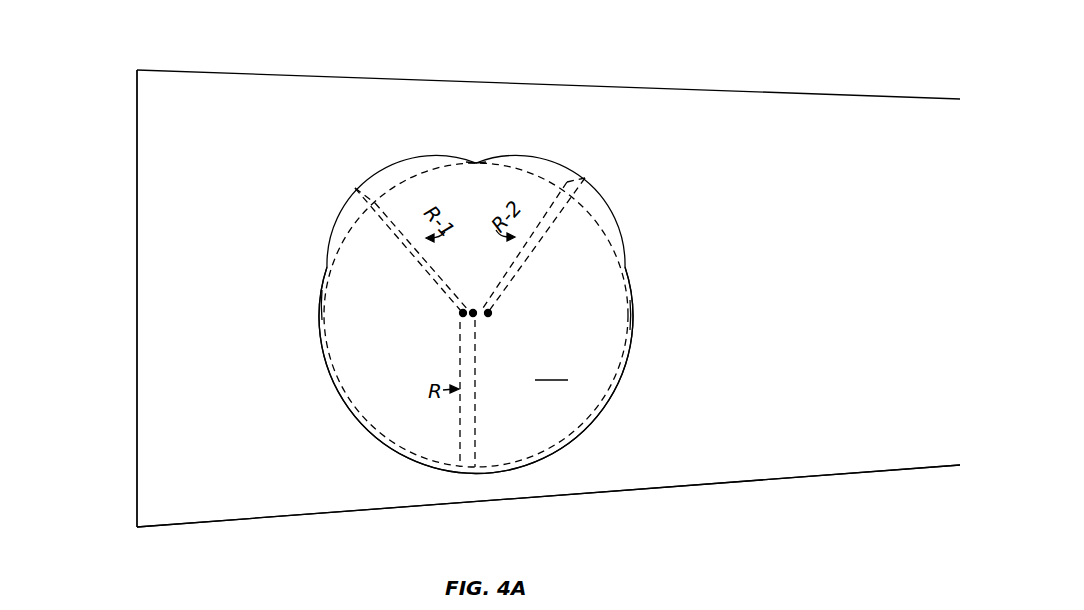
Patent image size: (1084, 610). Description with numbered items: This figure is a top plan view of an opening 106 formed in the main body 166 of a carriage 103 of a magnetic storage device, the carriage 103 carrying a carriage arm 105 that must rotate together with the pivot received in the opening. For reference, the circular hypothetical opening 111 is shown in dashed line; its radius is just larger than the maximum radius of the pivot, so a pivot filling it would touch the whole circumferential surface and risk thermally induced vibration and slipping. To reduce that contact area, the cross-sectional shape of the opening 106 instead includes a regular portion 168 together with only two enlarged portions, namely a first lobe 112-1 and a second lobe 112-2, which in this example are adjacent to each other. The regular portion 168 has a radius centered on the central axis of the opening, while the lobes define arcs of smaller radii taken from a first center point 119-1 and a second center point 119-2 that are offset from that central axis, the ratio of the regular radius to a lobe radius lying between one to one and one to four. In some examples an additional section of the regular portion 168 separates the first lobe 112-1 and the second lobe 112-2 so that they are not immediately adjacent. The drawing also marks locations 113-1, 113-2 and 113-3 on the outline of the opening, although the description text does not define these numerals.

The carriage 103 is at (132, 368).
The carriage arm 105 is at (823, 450).
The opening 106 is at (476, 370).
The hypothetical opening 111 is at (614, 250).
The first lobe 112-1 is at (335, 217).
The second lobe 112-2 is at (618, 220).
The first cusp 113-1 is at (476, 163).
The second edge point 113-2 is at (321, 300).
The third edge point 113-3 is at (631, 310).
The center point 119-1 is at (460, 313).
The center point 119-2 is at (491, 313).
The main body 166 is at (262, 492).
The regular portion 168 is at (588, 427).